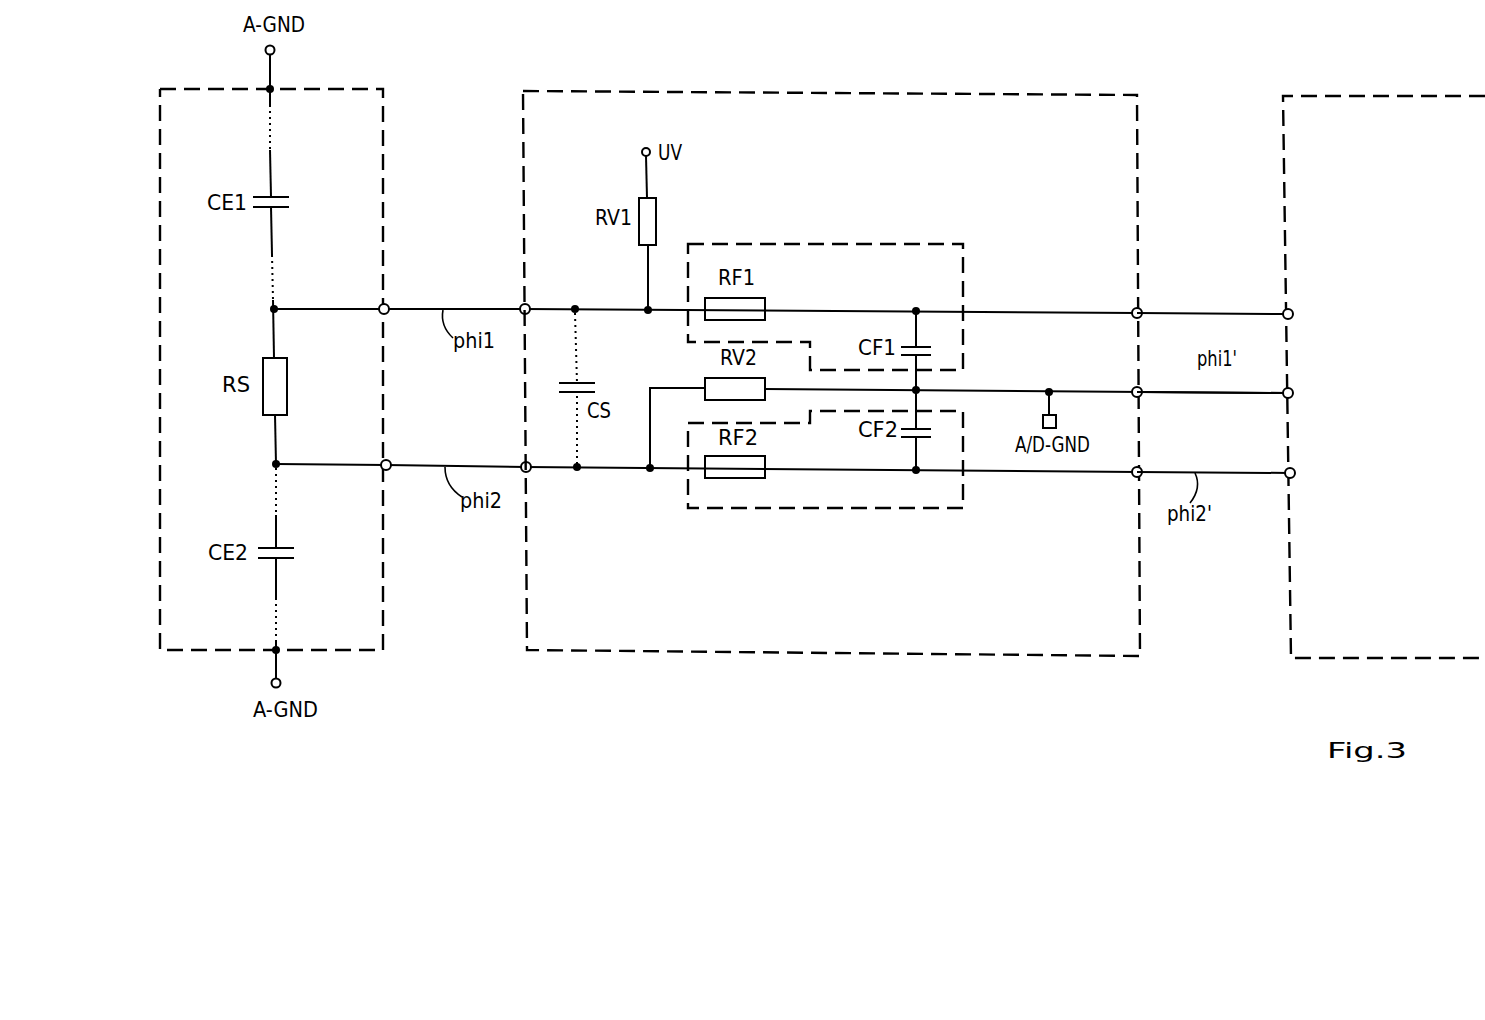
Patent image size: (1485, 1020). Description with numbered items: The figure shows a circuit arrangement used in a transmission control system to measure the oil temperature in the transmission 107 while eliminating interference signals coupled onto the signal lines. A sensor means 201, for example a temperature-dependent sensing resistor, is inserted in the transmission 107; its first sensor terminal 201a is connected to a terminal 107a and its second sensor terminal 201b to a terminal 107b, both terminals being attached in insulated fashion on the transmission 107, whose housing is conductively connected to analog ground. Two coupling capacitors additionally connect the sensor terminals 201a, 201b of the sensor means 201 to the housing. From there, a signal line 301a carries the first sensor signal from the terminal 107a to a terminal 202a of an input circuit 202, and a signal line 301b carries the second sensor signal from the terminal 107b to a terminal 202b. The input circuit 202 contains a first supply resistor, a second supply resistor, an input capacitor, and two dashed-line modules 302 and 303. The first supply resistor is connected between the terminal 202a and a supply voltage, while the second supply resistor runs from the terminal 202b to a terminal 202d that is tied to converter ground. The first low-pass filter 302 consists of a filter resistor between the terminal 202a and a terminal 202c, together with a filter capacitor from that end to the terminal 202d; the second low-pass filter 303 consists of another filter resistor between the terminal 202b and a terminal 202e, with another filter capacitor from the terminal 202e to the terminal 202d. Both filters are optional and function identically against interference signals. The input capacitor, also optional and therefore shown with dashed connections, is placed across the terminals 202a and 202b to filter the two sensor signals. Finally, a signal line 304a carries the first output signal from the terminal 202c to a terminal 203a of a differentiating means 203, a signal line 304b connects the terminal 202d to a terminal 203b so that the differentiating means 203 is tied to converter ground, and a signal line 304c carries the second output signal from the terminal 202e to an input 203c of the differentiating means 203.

The transmission 107 is at (362, 89).
The terminal 107a is at (386, 306).
The terminal 107b is at (388, 462).
The sensor means 201 is at (288, 390).
The terminal of sensor means 201a is at (275, 307).
The terminal of sensor means 201b is at (277, 462).
The input circuit 202 is at (1140, 95).
The terminal of input circuit 202a is at (524, 305).
The terminal of input circuit 202b is at (525, 463).
The terminal of input circuit 202c is at (1139, 310).
The terminal of input circuit 202d is at (1139, 389).
The terminal of input circuit 202e is at (1139, 469).
The differentiating means 203 is at (1402, 95).
The terminal of differentiating means 203a is at (1286, 310).
The terminal of differentiating means 203b is at (1286, 389).
The input of differentiating means 203c is at (1288, 477).
The signal line 301a is at (448, 308).
The signal line 301b is at (450, 466).
The first low-pass filter 302 is at (948, 243).
The second low-pass filter 303 is at (935, 510).
The signal line 304a is at (1218, 347).
The signal line 304b is at (1215, 393).
The signal line 304c is at (1225, 471).